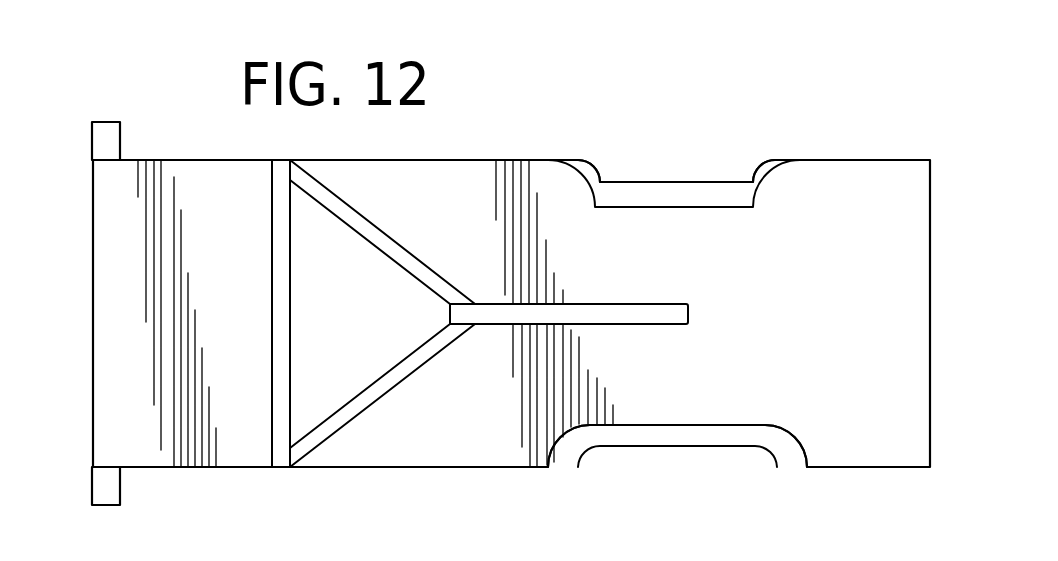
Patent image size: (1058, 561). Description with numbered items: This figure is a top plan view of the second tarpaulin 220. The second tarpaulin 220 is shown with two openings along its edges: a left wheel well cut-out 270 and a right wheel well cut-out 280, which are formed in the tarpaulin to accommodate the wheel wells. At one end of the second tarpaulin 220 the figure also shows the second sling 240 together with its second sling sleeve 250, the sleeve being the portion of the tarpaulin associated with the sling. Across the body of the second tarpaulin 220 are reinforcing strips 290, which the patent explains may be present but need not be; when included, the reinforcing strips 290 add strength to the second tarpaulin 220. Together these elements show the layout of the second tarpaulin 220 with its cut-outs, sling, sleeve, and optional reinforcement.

The second tarpaulin 220 is at (480, 178).
The second sling 240 is at (118, 135).
The second sling sleeve 250 is at (118, 268).
The left wheel well cut-out 270 is at (692, 447).
The right wheel well cut-out 280 is at (667, 182).
The reinforcing strips 290 is at (428, 265).